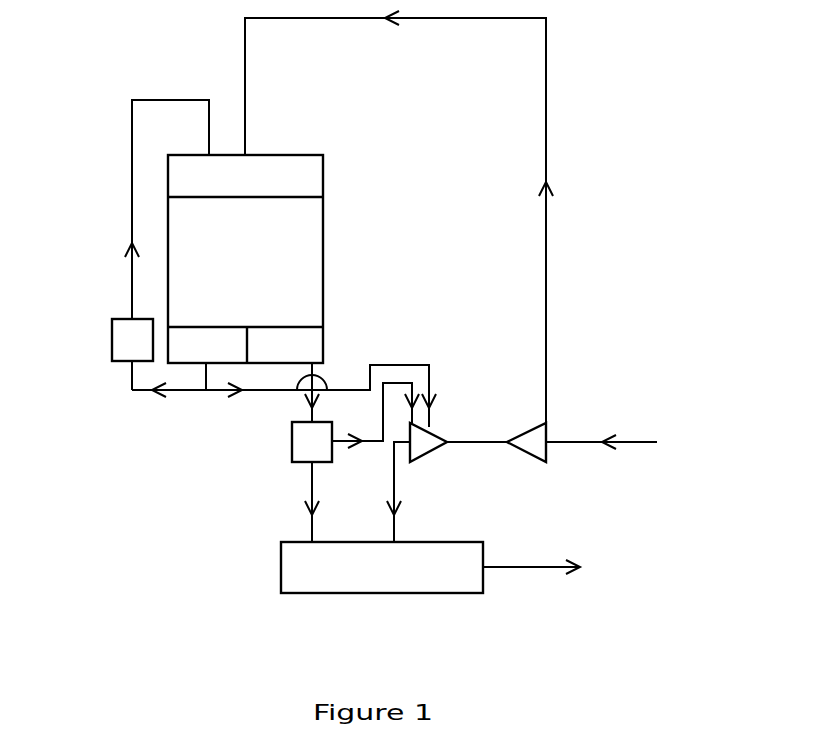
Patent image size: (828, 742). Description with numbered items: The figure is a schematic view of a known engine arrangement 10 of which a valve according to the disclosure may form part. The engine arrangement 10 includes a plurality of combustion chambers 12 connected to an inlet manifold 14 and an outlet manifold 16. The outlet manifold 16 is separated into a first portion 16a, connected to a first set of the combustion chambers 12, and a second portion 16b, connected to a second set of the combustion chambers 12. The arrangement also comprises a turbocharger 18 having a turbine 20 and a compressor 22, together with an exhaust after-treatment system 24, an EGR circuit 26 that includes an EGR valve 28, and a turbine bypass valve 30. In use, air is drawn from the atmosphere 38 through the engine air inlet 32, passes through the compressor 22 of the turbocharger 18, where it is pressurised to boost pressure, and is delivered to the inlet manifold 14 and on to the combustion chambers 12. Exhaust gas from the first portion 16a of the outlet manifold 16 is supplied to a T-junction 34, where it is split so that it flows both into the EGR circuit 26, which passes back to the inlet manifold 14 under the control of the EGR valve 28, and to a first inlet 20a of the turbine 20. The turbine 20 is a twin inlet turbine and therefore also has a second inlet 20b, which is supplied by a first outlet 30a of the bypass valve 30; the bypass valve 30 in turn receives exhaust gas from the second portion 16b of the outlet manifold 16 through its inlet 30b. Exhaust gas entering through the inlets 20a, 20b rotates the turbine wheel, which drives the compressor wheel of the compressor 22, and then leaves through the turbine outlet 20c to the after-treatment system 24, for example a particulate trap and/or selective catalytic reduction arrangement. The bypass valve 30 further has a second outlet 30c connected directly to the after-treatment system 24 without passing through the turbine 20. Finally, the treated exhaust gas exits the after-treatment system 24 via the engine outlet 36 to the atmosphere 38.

The engine arrangement 10 is at (600, 222).
The combustion chambers 12 is at (287, 241).
The inlet manifold 14 is at (287, 178).
The outlet manifold 16 is at (183, 355).
The first portion of the outlet manifold 16a is at (223, 355).
The second portion of the outlet manifold 16b is at (273, 350).
The turbocharger 18 is at (557, 478).
The turbine 20 is at (440, 437).
The first inlet of the turbine 20a is at (434, 426).
The second inlet of the turbine 20b is at (411, 422).
The turbine outlet 20c is at (403, 447).
The compressor 22 is at (547, 432).
The exhaust after-treatment system 24 is at (375, 593).
The EGR circuit 26 is at (131, 193).
The EGR valve 28 is at (112, 340).
The turbine bypass valve 30 is at (293, 462).
The first outlet of the bypass valve 30a is at (333, 447).
The inlet of the bypass valve 30b is at (318, 422).
The second outlet of the bypass valve 30c is at (307, 463).
The engine air inlet 32 is at (617, 442).
The T-junction 34 is at (205, 395).
The engine outlet 36 is at (527, 567).
The atmosphere 38 is at (611, 570).